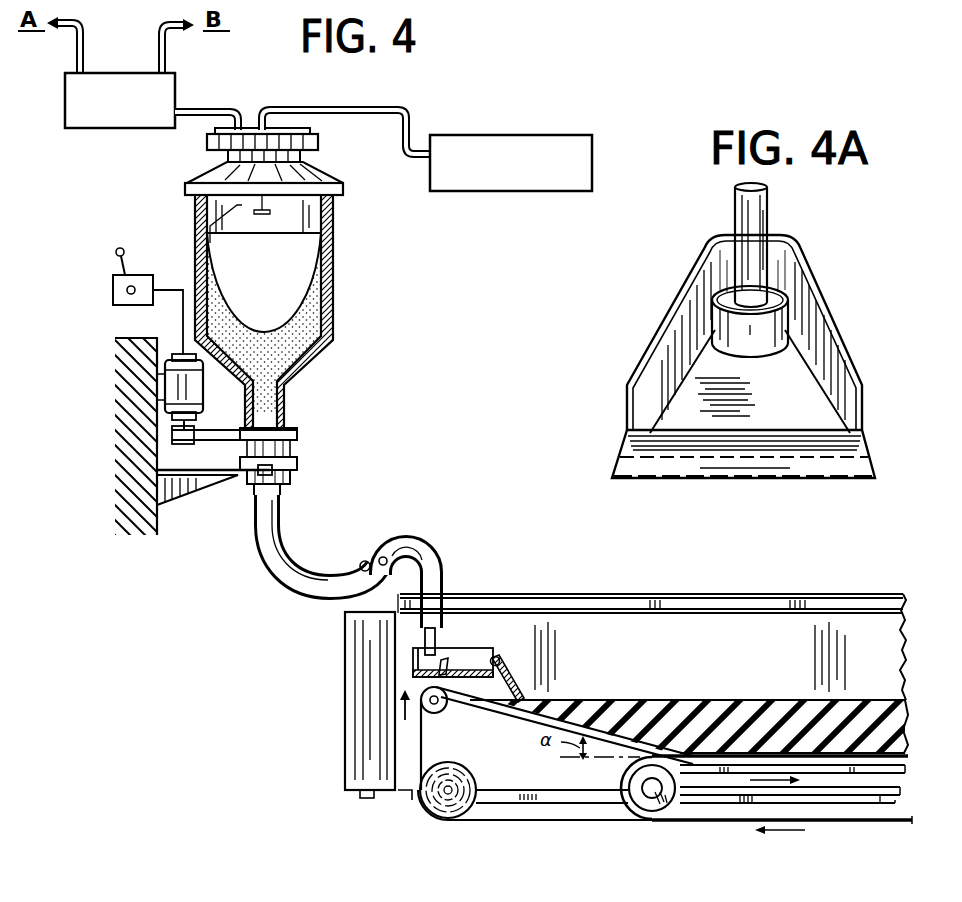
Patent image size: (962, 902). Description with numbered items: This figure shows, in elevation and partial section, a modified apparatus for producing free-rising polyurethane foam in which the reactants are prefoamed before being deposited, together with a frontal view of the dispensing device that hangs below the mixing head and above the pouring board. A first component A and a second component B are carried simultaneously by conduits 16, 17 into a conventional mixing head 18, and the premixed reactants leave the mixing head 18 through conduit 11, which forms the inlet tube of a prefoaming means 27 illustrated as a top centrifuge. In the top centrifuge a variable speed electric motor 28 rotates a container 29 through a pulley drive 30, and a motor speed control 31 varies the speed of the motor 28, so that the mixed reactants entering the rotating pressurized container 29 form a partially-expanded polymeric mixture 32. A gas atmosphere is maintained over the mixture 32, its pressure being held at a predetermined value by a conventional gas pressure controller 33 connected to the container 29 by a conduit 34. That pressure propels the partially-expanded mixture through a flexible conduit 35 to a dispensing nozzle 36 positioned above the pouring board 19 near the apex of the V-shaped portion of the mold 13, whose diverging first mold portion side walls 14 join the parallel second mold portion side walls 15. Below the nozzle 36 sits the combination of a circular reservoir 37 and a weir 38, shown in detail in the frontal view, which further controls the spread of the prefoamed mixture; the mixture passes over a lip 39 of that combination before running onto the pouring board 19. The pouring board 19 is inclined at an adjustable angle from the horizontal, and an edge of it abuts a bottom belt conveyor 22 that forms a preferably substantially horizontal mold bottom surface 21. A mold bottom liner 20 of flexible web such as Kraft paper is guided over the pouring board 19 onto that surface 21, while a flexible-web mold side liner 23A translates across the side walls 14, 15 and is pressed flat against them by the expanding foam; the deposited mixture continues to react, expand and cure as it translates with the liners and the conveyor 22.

In FIG. 4, the conduit 11 is at (192, 134).
In FIG. 4, the mold 13 is at (765, 743).
In FIG. 4, the first mold portion side walls 14 is at (605, 601).
In FIG. 4, the second mold portion side walls 15 is at (863, 596).
In FIG. 4, the conduit 16 is at (82, 50).
In FIG. 4, the conduit 17 is at (165, 57).
In FIG. 4, the mixing head 18 is at (124, 130).
In FIG. 4, the pouring board 19 is at (503, 714).
In FIG. 4, the mold bottom liner 20 is at (423, 720).
In FIG. 4, the mold bottom surface 21 is at (806, 752).
In FIG. 4, the bottom belt conveyor 22 is at (638, 816).
In FIG. 4, the second mold side liner 23A is at (346, 680).
In FIG. 4, the prefoaming means 27 is at (294, 306).
In FIG. 4, the variable speed electric motor 28 is at (200, 388).
In FIG. 4, the container 29 is at (334, 302).
In FIG. 4, the pulley drive 30 is at (220, 444).
In FIG. 4, the motor speed control 31 is at (140, 274).
In FIG. 4, the partially-expanded polymeric mixture 32 is at (283, 362).
In FIG. 4, the gas pressure controller 33 is at (596, 160).
In FIG. 4, the conduit 34 is at (412, 120).
In FIG. 4, the flexible conduit 35 is at (300, 590).
In FIG. 4, the dispensing nozzle 36 is at (437, 645).
In FIG. 4A, the dispensing nozzle 36 is at (762, 218).
In FIG. 4, the circular reservoir 37 is at (450, 668).
In FIG. 4A, the circular reservoir 37 is at (788, 318).
In FIG. 4, the weir 38 is at (498, 657).
In FIG. 4A, the weir 38 is at (762, 431).
In FIG. 4, the lip 39 is at (521, 690).
In FIG. 4A, the lip 39 is at (778, 465).